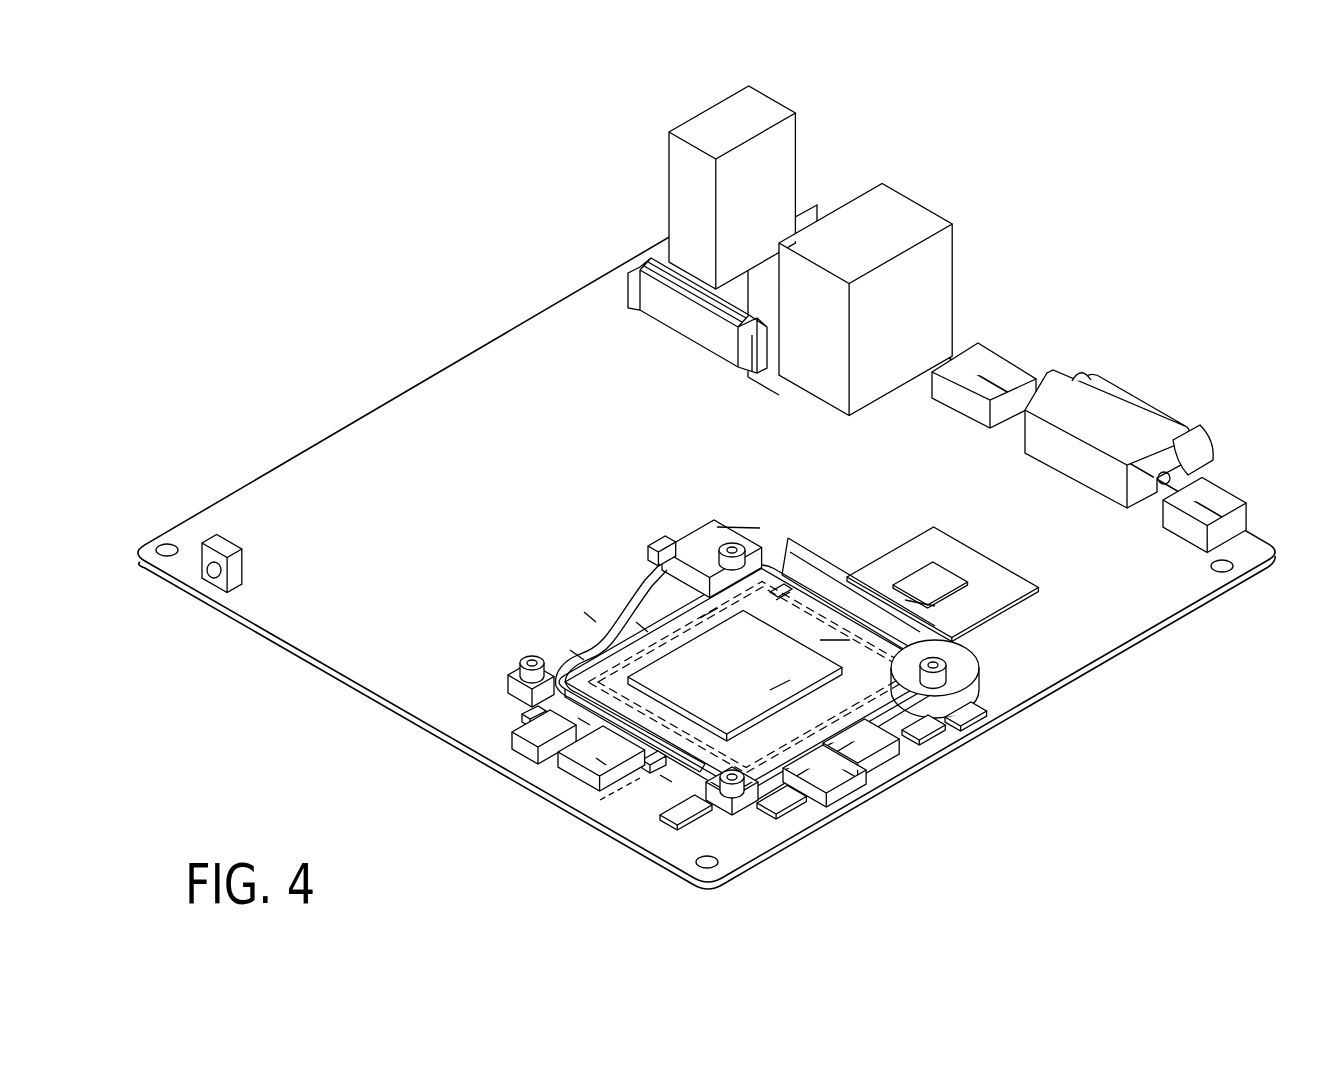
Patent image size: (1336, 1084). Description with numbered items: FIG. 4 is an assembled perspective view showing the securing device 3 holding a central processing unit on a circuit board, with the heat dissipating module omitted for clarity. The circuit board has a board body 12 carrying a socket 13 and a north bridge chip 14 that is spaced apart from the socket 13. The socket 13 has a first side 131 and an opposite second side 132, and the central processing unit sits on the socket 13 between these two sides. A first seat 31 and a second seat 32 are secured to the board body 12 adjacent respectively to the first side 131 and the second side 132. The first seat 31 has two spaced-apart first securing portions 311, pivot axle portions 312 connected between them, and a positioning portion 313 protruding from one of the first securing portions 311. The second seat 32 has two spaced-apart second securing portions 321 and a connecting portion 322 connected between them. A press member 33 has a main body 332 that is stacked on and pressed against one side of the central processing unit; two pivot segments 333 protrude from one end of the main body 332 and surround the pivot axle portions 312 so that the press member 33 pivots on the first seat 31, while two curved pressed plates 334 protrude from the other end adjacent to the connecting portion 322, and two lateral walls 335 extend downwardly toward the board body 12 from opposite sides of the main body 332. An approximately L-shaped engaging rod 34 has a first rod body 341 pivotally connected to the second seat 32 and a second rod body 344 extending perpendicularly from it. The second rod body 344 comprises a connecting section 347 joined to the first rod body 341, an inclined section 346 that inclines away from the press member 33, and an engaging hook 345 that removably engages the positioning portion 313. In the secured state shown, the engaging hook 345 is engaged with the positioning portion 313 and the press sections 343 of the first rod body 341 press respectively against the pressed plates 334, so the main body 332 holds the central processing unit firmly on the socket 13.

The board body 12 is at (379, 419).
The socket 13 is at (650, 637).
The first side 131 is at (795, 573).
The second side 132 is at (600, 760).
The north bridge chip 14 is at (1002, 583).
The securing device 3 is at (532, 512).
The first seat 31 is at (852, 562).
The first securing portions 311 is at (752, 543).
The pivot axle portions 312 is at (782, 602).
The positioning portion 313 is at (660, 546).
The second seat 32 is at (620, 811).
The second securing portions 321 is at (508, 683).
The connecting portion 322 is at (610, 808).
The press member 33 is at (850, 730).
The main body 332 is at (925, 603).
The pivot segments 333 is at (782, 597).
The pressed plates 334 is at (590, 722).
The lateral walls 335 is at (672, 605).
The engaging rod 34 is at (626, 564).
The first rod body 341 is at (619, 741).
The press sections 343 is at (522, 718).
The second rod body 344 is at (592, 620).
The engaging hook 345 is at (680, 545).
The inclined section 346 is at (644, 630).
The connecting section 347 is at (577, 655).